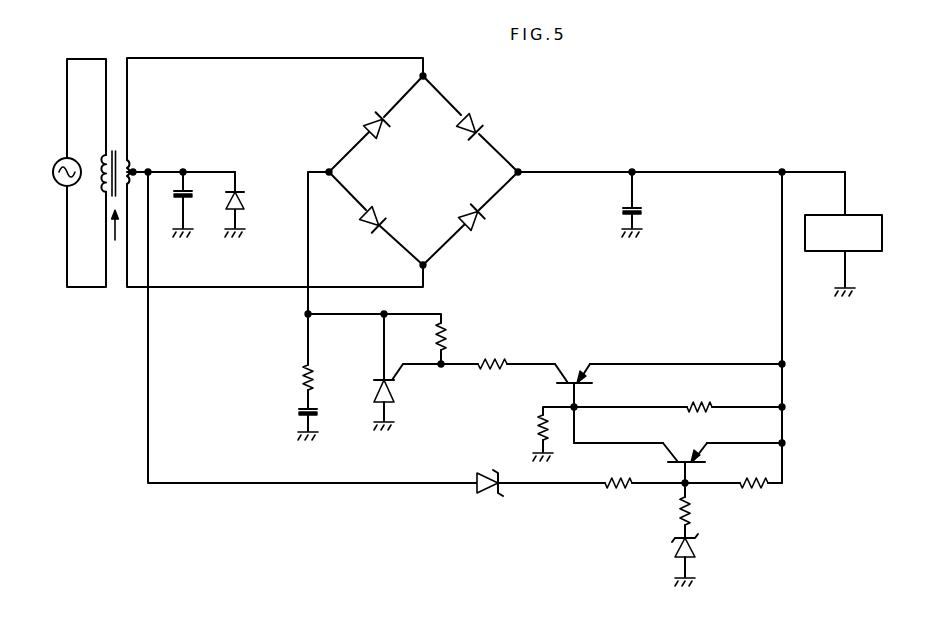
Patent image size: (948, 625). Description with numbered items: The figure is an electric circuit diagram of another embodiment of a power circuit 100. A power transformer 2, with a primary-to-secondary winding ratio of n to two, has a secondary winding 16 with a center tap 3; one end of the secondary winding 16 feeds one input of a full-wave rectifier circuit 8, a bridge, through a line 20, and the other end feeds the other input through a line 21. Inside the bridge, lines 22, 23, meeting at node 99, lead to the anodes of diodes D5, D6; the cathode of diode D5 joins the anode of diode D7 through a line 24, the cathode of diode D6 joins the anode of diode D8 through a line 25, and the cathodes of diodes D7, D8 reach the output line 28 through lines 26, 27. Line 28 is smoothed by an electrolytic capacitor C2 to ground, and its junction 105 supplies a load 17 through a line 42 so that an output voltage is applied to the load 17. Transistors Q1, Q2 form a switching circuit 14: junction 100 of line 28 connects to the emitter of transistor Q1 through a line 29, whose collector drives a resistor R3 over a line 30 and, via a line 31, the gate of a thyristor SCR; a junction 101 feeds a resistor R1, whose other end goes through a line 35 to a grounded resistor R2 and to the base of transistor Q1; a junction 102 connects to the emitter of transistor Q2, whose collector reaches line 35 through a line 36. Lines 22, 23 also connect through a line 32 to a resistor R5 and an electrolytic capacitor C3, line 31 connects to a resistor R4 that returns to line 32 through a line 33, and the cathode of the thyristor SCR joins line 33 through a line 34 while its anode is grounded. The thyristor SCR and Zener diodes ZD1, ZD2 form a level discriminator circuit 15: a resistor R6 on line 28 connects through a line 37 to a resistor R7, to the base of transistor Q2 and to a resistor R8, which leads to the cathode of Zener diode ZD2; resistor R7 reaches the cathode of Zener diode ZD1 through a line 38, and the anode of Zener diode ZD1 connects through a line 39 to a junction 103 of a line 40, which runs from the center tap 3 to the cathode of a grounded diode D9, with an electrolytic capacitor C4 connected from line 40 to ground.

The power transformer 2 is at (115, 236).
The center tap 3 is at (133, 165).
The full-wave rectifier circuit 8 is at (436, 160).
The switching circuit 14 is at (709, 430).
The level discriminator circuit 15 is at (560, 574).
The secondary winding 16 is at (134, 178).
The load 17 is at (858, 214).
The line 26 is at (508, 148).
The bridge input node 99 is at (326, 178).
The power circuit 100 is at (817, 41).
The junction 101 is at (786, 410).
The junction 102 is at (786, 445).
The junction 103 is at (150, 170).
The junction 105 is at (781, 168).
The line 20 is at (250, 56).
The line 21 is at (205, 291).
The line 22 is at (350, 146).
The line 23 is at (346, 187).
The line 24 is at (437, 90).
The line 25 is at (438, 250).
The line 27 is at (500, 195).
The line 28 is at (680, 170).
The line 29 is at (688, 362).
The line 30 is at (526, 382).
The line 31 is at (460, 370).
The line 32 is at (307, 251).
The line 33 is at (414, 312).
The line 34 is at (382, 346).
The line 35 is at (630, 405).
The line 36 is at (600, 445).
The line 37 is at (716, 487).
The line 38 is at (565, 487).
The line 39 is at (278, 486).
The line 40 is at (188, 168).
The line 42 is at (810, 170).
The electrolytic capacitor C2 is at (640, 214).
The electrolytic capacitor C3 is at (316, 419).
The electrolytic capacitor C4 is at (187, 199).
The diode D5 is at (368, 112).
The diode D6 is at (365, 230).
The diode D7 is at (472, 112).
The diode D8 is at (480, 228).
The diode D9 is at (242, 187).
The resistor R1 is at (700, 403).
The resistor R2 is at (540, 423).
The resistor R3 is at (497, 358).
The resistor R4 is at (446, 343).
The resistor R5 is at (303, 379).
The resistor R6 is at (755, 491).
The resistor R7 is at (608, 491).
The resistor R8 is at (680, 517).
The transistor Q1 is at (565, 375).
The transistor Q2 is at (684, 456).
The thyristor SCR is at (391, 372).
The Zener diode ZD1 is at (486, 497).
The Zener diode ZD2 is at (702, 552).